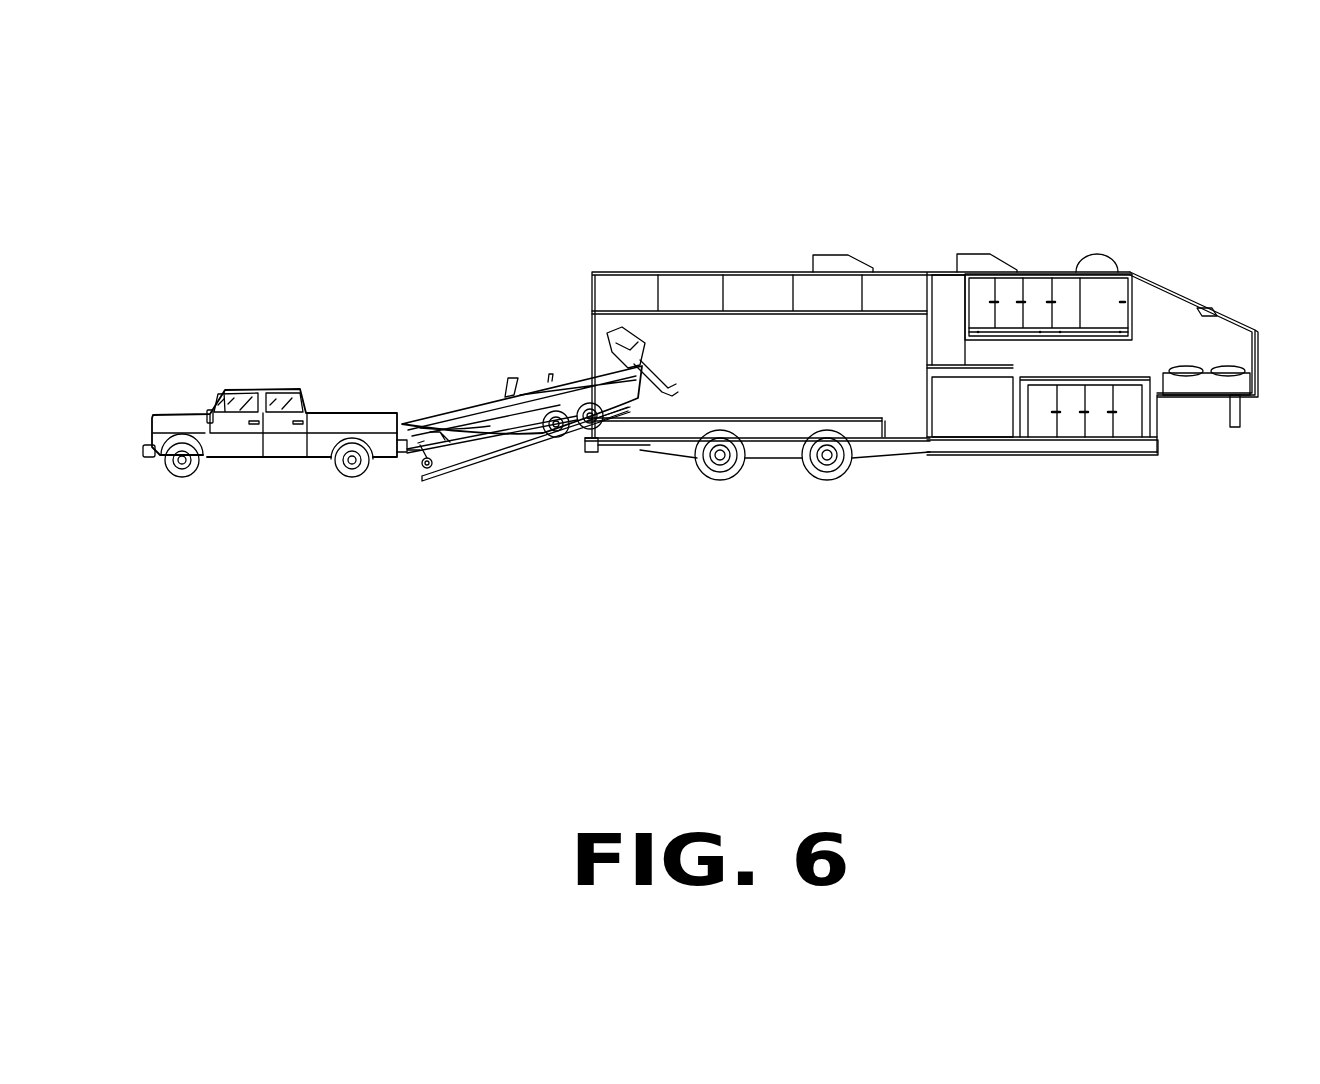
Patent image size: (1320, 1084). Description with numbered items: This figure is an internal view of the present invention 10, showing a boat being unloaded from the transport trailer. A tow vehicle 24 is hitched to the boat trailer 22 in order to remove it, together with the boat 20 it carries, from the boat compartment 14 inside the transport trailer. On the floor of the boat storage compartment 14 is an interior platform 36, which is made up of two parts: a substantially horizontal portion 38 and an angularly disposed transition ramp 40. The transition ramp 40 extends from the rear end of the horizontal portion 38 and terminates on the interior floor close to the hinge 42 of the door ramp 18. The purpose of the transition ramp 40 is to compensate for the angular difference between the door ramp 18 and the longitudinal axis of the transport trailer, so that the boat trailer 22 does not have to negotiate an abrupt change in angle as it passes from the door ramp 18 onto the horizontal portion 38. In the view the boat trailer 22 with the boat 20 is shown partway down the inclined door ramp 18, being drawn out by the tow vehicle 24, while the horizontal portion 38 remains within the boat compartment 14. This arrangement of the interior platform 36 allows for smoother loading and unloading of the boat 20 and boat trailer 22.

The present invention 10 is at (1032, 232).
The boat compartment 14 is at (795, 390).
The door ramp 18 is at (530, 452).
The boat 20 is at (493, 395).
The boat trailer 22 is at (465, 445).
The tow vehicle 24 is at (322, 418).
The interior platform 36 is at (893, 420).
The horizontal portion 38 is at (730, 420).
The transition ramp 40 is at (658, 430).
The hinge 42 is at (592, 442).